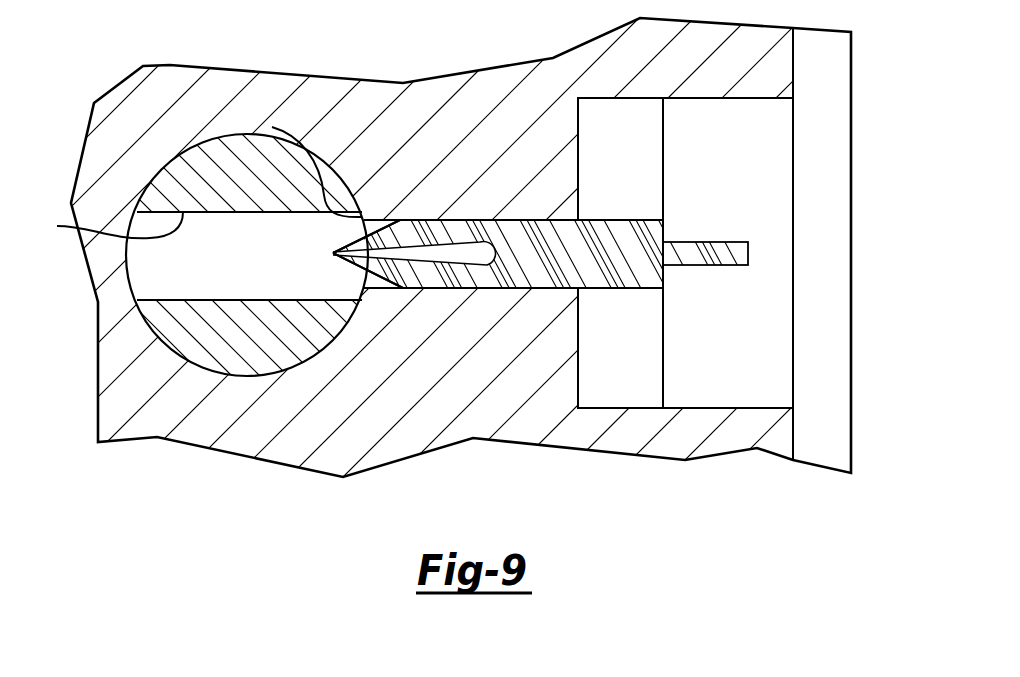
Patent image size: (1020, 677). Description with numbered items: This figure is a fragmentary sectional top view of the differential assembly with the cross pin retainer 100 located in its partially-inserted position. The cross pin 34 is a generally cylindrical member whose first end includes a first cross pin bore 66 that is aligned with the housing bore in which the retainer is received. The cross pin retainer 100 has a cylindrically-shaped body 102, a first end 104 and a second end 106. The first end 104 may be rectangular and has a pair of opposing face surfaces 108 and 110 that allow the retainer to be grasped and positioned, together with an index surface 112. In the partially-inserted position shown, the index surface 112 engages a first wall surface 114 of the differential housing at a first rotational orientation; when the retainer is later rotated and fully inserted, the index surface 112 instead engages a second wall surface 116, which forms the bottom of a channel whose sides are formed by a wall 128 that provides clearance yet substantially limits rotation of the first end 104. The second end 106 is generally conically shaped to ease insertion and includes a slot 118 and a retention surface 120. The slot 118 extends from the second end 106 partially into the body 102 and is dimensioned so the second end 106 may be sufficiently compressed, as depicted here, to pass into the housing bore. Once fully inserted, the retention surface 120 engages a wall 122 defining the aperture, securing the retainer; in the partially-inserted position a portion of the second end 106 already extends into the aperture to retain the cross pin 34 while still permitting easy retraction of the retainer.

The cross pin 34 is at (168, 166).
The first cross pin bore 66 is at (103, 226).
The cross pin retainer 100 is at (451, 130).
The body 102 is at (503, 205).
The first end 104 is at (766, 249).
The second end 106 is at (320, 245).
The face surface 108 is at (724, 240).
The face surface 110 is at (731, 266).
The index surface 112 is at (660, 250).
The first wall surface 114 is at (666, 333).
The second wall surface 116 is at (580, 355).
The slot 118 is at (468, 268).
The retention surface 120 is at (427, 290).
The wall 122 is at (300, 161).
The wall 128 is at (593, 100).